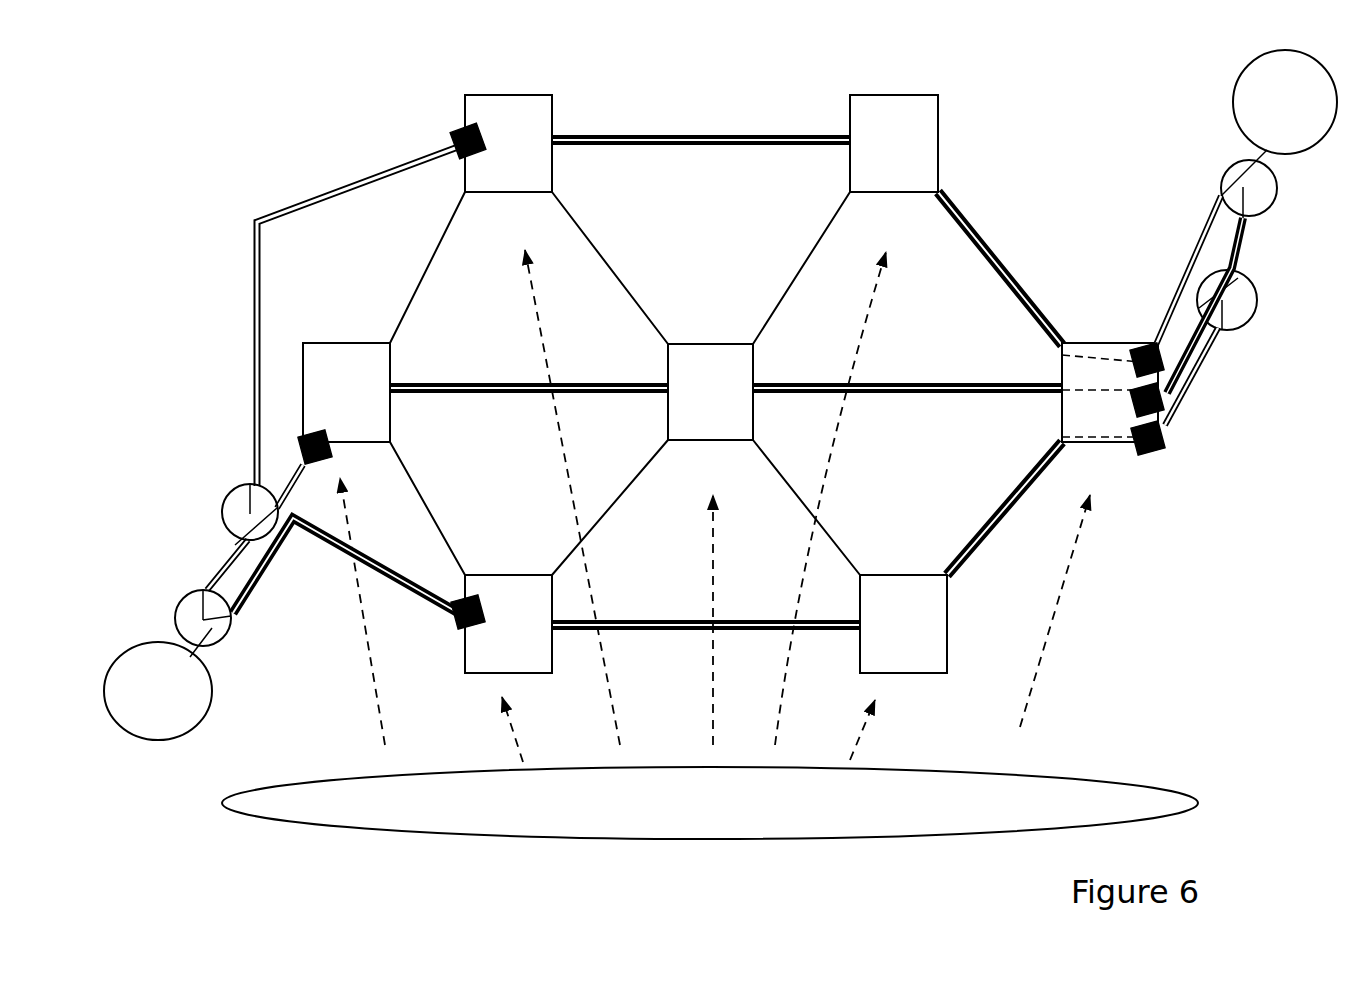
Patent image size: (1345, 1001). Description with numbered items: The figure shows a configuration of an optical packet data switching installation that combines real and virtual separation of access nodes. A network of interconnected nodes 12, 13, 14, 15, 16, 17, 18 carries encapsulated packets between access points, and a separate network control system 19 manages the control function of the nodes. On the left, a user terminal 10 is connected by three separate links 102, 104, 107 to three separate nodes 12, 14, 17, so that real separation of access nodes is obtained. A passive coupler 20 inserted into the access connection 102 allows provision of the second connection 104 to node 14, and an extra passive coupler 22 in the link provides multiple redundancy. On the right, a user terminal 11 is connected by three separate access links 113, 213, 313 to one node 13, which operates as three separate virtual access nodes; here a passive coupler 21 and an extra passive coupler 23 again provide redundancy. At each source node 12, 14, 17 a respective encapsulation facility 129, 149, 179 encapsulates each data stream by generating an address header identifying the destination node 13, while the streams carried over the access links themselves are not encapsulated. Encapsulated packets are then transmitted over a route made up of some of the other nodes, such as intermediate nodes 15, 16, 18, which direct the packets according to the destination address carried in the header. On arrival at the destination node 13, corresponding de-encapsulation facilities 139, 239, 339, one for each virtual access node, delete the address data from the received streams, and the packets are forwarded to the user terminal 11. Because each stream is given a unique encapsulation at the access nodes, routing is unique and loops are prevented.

The user terminal 10 is at (158, 712).
The user terminal 11 is at (1250, 123).
The local node 12 is at (346, 370).
The local node 13 is at (1110, 416).
The node 14 is at (508, 600).
The node 15 is at (903, 600).
The intermediate node 16 is at (710, 418).
The node 17 is at (508, 169).
The node 18 is at (894, 169).
The network control system 19 is at (710, 785).
The passive coupler 20 is at (183, 619).
The passive coupler 21 is at (1276, 189).
The extra passive coupler 22 is at (225, 510).
The extra passive coupler 23 is at (1253, 300).
The access connection 102 is at (283, 527).
The second connection 104 is at (347, 566).
The link 107 is at (357, 316).
The access connection 113 is at (1197, 224).
The access link 213 is at (1212, 348).
The access link 313 is at (1180, 320).
The encapsulation facility 129 is at (318, 426).
The de-encapsulation facility 139 is at (1139, 345).
The encapsulation facility 149 is at (438, 630).
The encapsulation facility 179 is at (445, 122).
The de-encapsulation facility 239 is at (1185, 449).
The de-encapsulation facility 339 is at (1170, 403).